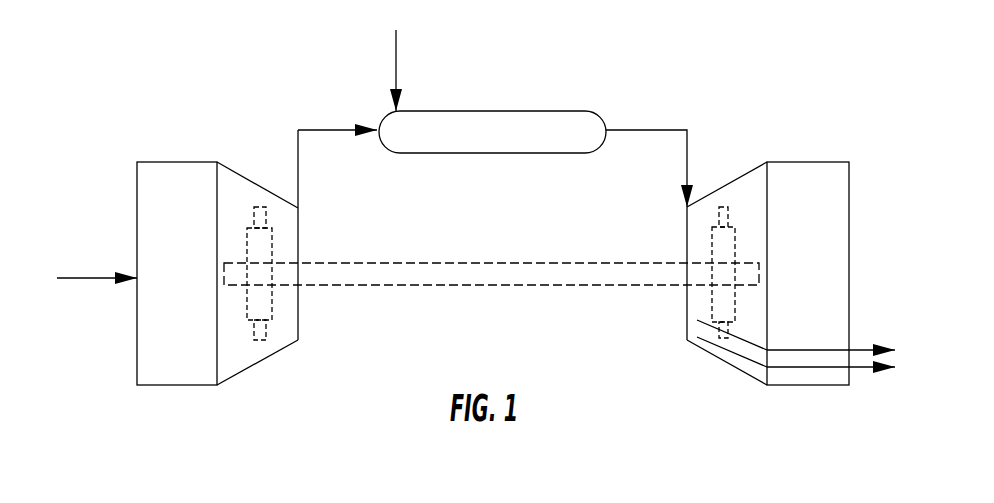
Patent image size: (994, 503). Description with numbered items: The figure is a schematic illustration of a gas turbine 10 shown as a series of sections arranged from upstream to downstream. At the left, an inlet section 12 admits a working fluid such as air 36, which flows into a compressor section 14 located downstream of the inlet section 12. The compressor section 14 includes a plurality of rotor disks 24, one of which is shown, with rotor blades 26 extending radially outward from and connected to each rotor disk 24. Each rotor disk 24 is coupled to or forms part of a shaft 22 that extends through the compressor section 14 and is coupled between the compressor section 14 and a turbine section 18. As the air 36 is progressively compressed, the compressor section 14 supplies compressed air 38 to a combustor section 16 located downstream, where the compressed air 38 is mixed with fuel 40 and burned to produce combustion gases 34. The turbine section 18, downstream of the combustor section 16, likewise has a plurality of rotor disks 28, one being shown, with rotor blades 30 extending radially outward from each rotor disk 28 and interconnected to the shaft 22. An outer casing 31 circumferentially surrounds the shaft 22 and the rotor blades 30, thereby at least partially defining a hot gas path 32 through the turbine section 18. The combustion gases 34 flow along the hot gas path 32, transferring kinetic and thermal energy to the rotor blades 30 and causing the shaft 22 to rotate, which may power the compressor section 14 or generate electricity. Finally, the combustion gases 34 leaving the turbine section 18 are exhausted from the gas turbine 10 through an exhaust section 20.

The gas turbine 10 is at (347, 55).
The inlet section 12 is at (160, 162).
The compressor section 14 is at (245, 178).
The combustor section 16 is at (545, 111).
The turbine section 18 is at (737, 180).
The exhaust section 20 is at (825, 162).
The shaft 22 is at (452, 285).
The rotor disk 24 is at (247, 238).
The rotor blade 26 is at (254, 214).
The rotor disk 28 is at (712, 245).
The rotor blade 30 is at (721, 205).
The outer casing 31 is at (760, 385).
The hot gas path 32 is at (737, 362).
The combustion gases 34 is at (655, 130).
The air 36 is at (98, 278).
The compressed air 38 is at (327, 130).
The fuel 40 is at (396, 70).